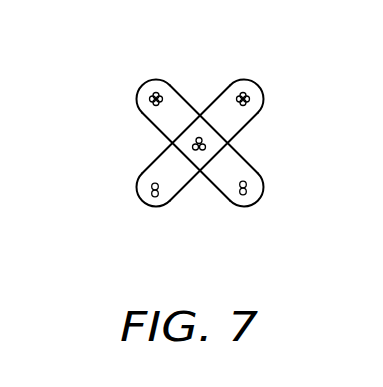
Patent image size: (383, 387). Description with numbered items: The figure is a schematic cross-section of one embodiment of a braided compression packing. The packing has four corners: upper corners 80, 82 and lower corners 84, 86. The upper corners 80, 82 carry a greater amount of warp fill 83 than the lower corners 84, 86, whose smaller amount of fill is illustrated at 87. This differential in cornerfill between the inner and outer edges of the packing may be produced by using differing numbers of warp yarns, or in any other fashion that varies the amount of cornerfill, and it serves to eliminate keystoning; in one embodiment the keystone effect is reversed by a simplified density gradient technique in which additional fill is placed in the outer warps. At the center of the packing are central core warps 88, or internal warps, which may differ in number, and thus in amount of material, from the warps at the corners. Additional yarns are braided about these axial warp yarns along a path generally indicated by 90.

The corner 80 is at (271, 84).
The corner 82 is at (127, 91).
The lower corner 84 is at (128, 203).
The lower corner 86 is at (275, 203).
The warp fill 83 is at (236, 95).
The warp fill of lower corners 87 is at (237, 189).
The central core warps 88 is at (207, 145).
The braiding path 90 is at (256, 116).